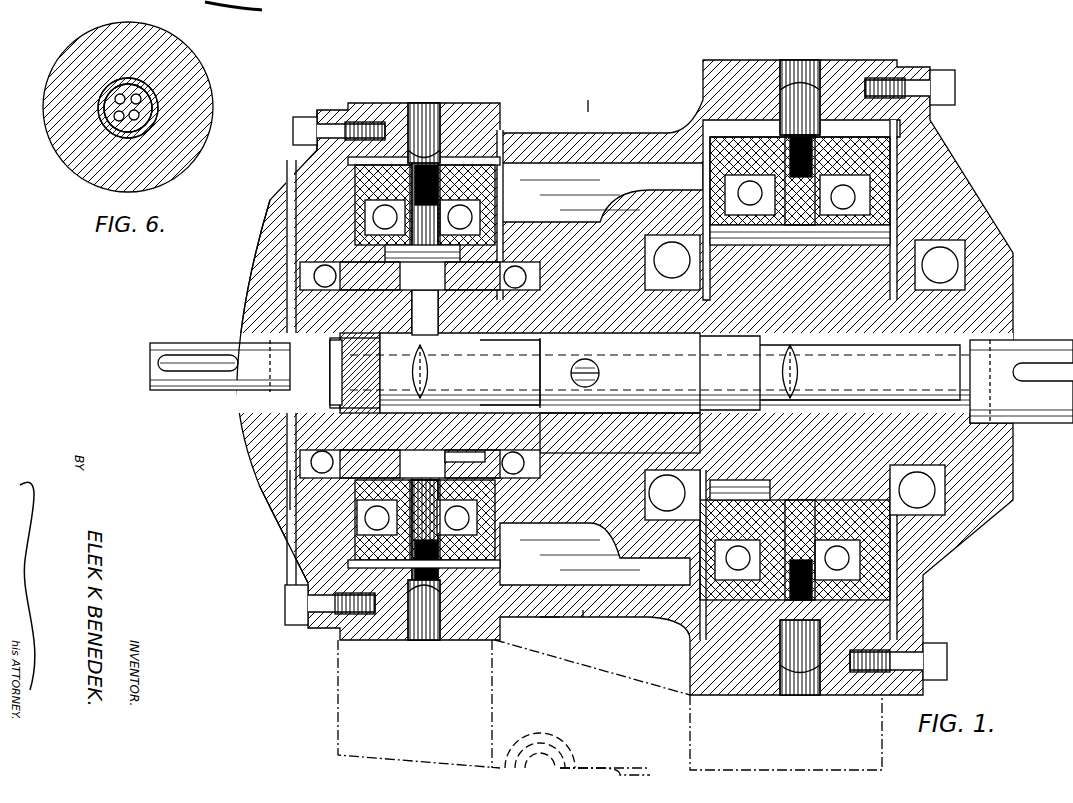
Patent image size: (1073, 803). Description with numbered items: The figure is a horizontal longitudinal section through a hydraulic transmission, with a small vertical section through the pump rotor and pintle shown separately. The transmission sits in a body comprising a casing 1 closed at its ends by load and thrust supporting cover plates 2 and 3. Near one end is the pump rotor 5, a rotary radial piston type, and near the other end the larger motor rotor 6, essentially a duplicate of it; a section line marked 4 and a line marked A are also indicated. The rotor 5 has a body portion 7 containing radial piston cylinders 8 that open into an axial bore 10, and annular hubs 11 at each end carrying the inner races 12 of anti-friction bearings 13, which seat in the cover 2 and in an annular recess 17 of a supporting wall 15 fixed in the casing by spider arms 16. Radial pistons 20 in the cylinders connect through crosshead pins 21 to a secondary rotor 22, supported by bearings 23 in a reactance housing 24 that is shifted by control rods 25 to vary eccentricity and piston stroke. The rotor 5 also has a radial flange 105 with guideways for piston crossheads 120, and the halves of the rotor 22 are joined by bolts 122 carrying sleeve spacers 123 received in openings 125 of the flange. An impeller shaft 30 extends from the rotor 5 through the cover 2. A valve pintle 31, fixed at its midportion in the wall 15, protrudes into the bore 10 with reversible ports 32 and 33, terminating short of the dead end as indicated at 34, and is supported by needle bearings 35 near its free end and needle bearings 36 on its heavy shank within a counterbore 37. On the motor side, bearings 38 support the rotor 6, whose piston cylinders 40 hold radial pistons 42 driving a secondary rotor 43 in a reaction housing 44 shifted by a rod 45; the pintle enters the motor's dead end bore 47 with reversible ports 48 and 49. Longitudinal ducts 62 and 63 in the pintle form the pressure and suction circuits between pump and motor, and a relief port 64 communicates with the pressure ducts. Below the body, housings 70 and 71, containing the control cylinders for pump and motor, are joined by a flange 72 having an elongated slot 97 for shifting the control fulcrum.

In FIG. 1, the casing 1 is at (545, 617).
In FIG. 1, the cover plate 2 is at (440, 670).
In FIG. 1, the cover plate 3 is at (800, 60).
In FIG. 1, the section line 4- 4 is at (583, 133).
In FIG. 6, the pump rotor 5 is at (215, 97).
In FIG. 1, the pump rotor 5 is at (675, 388).
In FIG. 1, the motor rotor 6 is at (350, 464).
In FIG. 1, the body portion 7 is at (300, 340).
In FIG. 1, the piston cylinders 8 is at (427, 267).
In FIG. 1, the axial bore 10 is at (265, 450).
In FIG. 1, the annular hubs 11 is at (300, 320).
In FIG. 1, the inner races 12 is at (320, 300).
In FIG. 1, the anti-friction bearings 13 is at (314, 275).
In FIG. 1, the supporting wall 15 is at (615, 250).
In FIG. 1, the spider arms 16 is at (580, 150).
In FIG. 1, the annular recess 17 is at (552, 235).
In FIG. 1, the radial pistons 20 is at (425, 371).
In FIG. 1, the crosshead pin 21 is at (370, 245).
In FIG. 1, the secondary rotor 22 is at (380, 260).
In FIG. 1, the anti-friction bearings 23 is at (355, 215).
In FIG. 1, the reactance housing 24 is at (355, 175).
In FIG. 1, the control rods 25 is at (428, 130).
In FIG. 1, the impeller shaft 30 is at (200, 345).
In FIG. 6, the valve pintle 31 is at (108, 112).
In FIG. 1, the valve pintle 31 is at (335, 398).
In FIG. 1, the reversible ports 32 is at (432, 366).
In FIG. 1, the reversible ports 33 is at (410, 366).
In FIG. 1, the pintle end spacing 34 is at (290, 380).
In FIG. 6, the needle bearings 35 is at (106, 126).
In FIG. 1, the needle bearings 35 is at (345, 348).
In FIG. 1, the needle bearings 36 is at (528, 340).
In FIG. 1, the counterbore 37 is at (465, 460).
In FIG. 1, the anti-friction bearings 38 is at (925, 252).
In FIG. 1, the piston cylinders 40 is at (760, 290).
In FIG. 1, the radial pistons 42 is at (866, 262).
In FIG. 1, the secondary rotor 43 is at (880, 212).
In FIG. 1, the reaction housing 44 is at (885, 150).
In FIG. 1, the rod 45 is at (805, 85).
In FIG. 1, the axial bore 47 is at (840, 420).
In FIG. 1, the reversible ports 48 is at (798, 372).
In FIG. 1, the reversible ports 49 is at (782, 370).
In FIG. 6, the pressure ducts 62 is at (142, 93).
In FIG. 1, the pressure ducts 62 is at (577, 380).
In FIG. 6, the suction ducts 63 is at (112, 120).
In FIG. 1, the relief port 64 is at (592, 360).
In FIG. 1, the housing 70 is at (495, 683).
In FIG. 1, the housing 71 is at (690, 716).
In FIG. 1, the flange 72 is at (605, 663).
In FIG. 1, the slot 97 is at (580, 760).
In FIG. 1, the radial flange 105 is at (345, 556).
In FIG. 1, the crossheads 120 is at (512, 140).
In FIG. 1, the bolts 122 is at (350, 515).
In FIG. 1, the sleeve spacers 123 is at (345, 535).
In FIG. 1, the openings 125 is at (315, 572).
In FIG. 1, the section line A is at (588, 300).